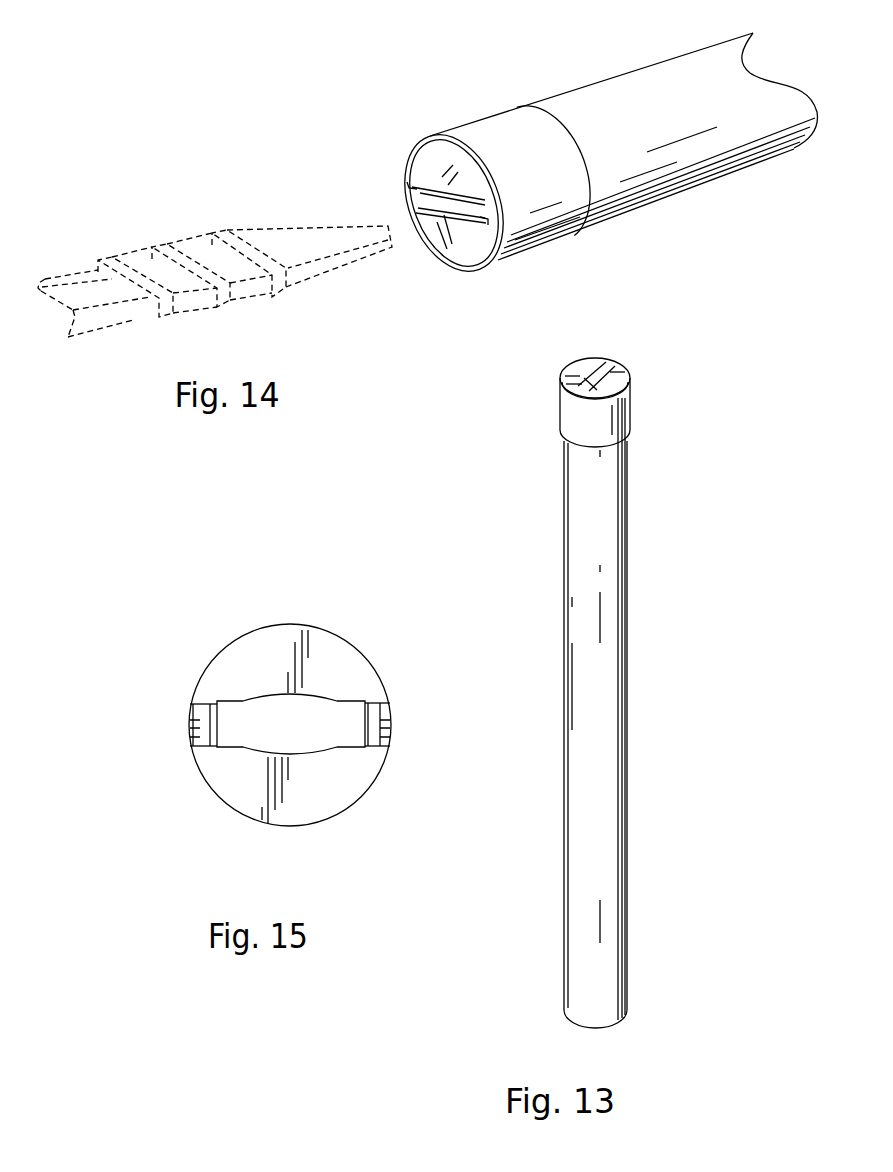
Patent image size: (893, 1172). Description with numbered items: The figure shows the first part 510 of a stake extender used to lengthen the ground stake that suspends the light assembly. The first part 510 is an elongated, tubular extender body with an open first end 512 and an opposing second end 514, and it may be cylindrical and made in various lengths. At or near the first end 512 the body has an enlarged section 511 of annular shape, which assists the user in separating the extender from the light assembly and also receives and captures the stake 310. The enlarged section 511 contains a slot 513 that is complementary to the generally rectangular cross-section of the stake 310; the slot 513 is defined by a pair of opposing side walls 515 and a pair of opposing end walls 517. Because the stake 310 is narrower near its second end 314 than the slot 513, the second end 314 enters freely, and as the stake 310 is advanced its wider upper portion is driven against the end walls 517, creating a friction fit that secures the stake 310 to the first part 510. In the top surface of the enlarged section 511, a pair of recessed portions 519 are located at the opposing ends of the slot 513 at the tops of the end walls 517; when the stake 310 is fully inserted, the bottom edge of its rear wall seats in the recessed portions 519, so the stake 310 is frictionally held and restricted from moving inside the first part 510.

In FIG. 14, the stake 310 is at (78, 293).
In FIG. 14, the second end 314 is at (380, 243).
In FIG. 13, the first part 510 is at (610, 650).
In FIG. 14, the enlarged section 511 is at (500, 150).
In FIG. 13, the enlarged section 511 is at (608, 417).
In FIG. 13, the first end 512 is at (617, 377).
In FIG. 13, the slot 513 is at (590, 380).
In FIG. 15, the slot 513 is at (280, 710).
In FIG. 13, the second end 514 is at (620, 1017).
In FIG. 14, the side walls 515 is at (462, 225).
In FIG. 13, the side walls 515 is at (583, 395).
In FIG. 15, the side walls 515 is at (282, 692).
In FIG. 14, the end walls 517 is at (415, 190).
In FIG. 13, the end walls 517 is at (605, 372).
In FIG. 15, the end walls 517 is at (203, 710).
In FIG. 14, the recessed portions 519 is at (497, 227).
In FIG. 15, the recessed portions 519 is at (193, 733).